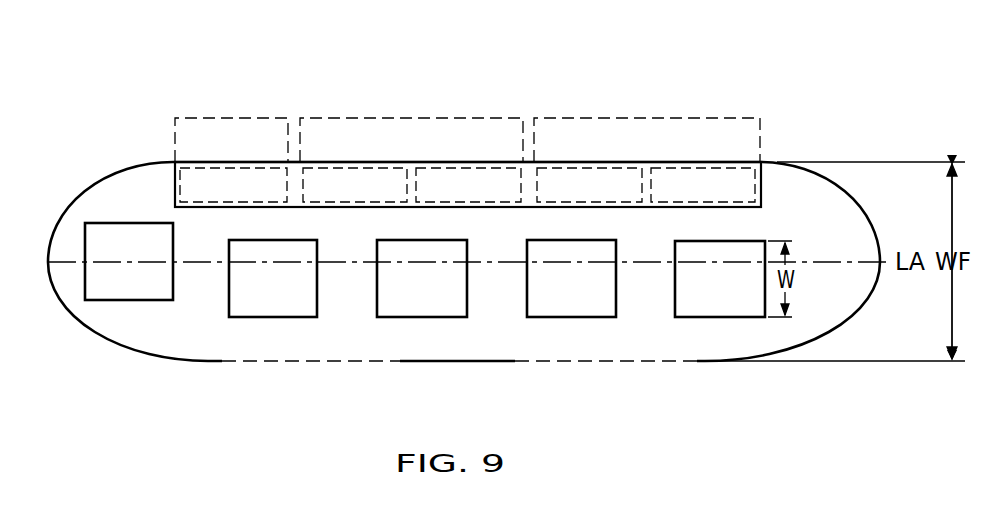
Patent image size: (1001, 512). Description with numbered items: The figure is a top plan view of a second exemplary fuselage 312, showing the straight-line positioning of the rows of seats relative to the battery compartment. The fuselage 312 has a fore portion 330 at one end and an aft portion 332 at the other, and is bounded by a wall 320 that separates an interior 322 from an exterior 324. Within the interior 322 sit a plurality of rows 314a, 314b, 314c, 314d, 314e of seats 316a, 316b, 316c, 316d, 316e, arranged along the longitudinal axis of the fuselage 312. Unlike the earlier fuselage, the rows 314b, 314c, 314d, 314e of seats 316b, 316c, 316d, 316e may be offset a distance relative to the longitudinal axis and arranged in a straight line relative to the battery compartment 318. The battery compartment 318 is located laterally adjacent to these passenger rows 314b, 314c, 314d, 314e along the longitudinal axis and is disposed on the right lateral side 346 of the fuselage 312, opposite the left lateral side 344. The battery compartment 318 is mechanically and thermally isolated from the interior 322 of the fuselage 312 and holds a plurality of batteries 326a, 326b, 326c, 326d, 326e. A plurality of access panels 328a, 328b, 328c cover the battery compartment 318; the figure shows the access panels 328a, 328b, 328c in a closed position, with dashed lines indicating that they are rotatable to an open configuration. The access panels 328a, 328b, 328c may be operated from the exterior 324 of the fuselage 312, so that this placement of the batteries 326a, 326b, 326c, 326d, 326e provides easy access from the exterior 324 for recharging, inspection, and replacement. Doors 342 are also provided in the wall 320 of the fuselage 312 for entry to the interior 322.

The fuselage 312 is at (90, 181).
The first row of seats 314a is at (170, 316).
The second row of seats 314b is at (297, 323).
The third row of seats 314c is at (434, 323).
The fourth row of seats 314d is at (560, 323).
The fifth row of seats 314e is at (733, 323).
The first seat 316a is at (142, 301).
The second seat 316b is at (318, 241).
The third seat 316c is at (468, 241).
The fourth seat 316d is at (617, 241).
The fifth seat 316e is at (674, 317).
The battery compartment 318 is at (533, 186).
The wall 320 is at (208, 362).
The interior 322 is at (118, 195).
The exterior 324 is at (158, 162).
The first battery 326a is at (213, 167).
The second battery 326b is at (335, 167).
The third battery 326c is at (435, 167).
The fourth battery 326d is at (597, 167).
The fifth battery 326e is at (708, 167).
The first access panel 328a is at (265, 117).
The second access panel 328b is at (495, 117).
The third access panel 328c is at (658, 117).
The fore portion 330 is at (100, 320).
The aft portion 332 is at (868, 218).
The doors 342 is at (355, 363).
The left lateral side 344 is at (468, 363).
The right lateral side 346 is at (378, 160).